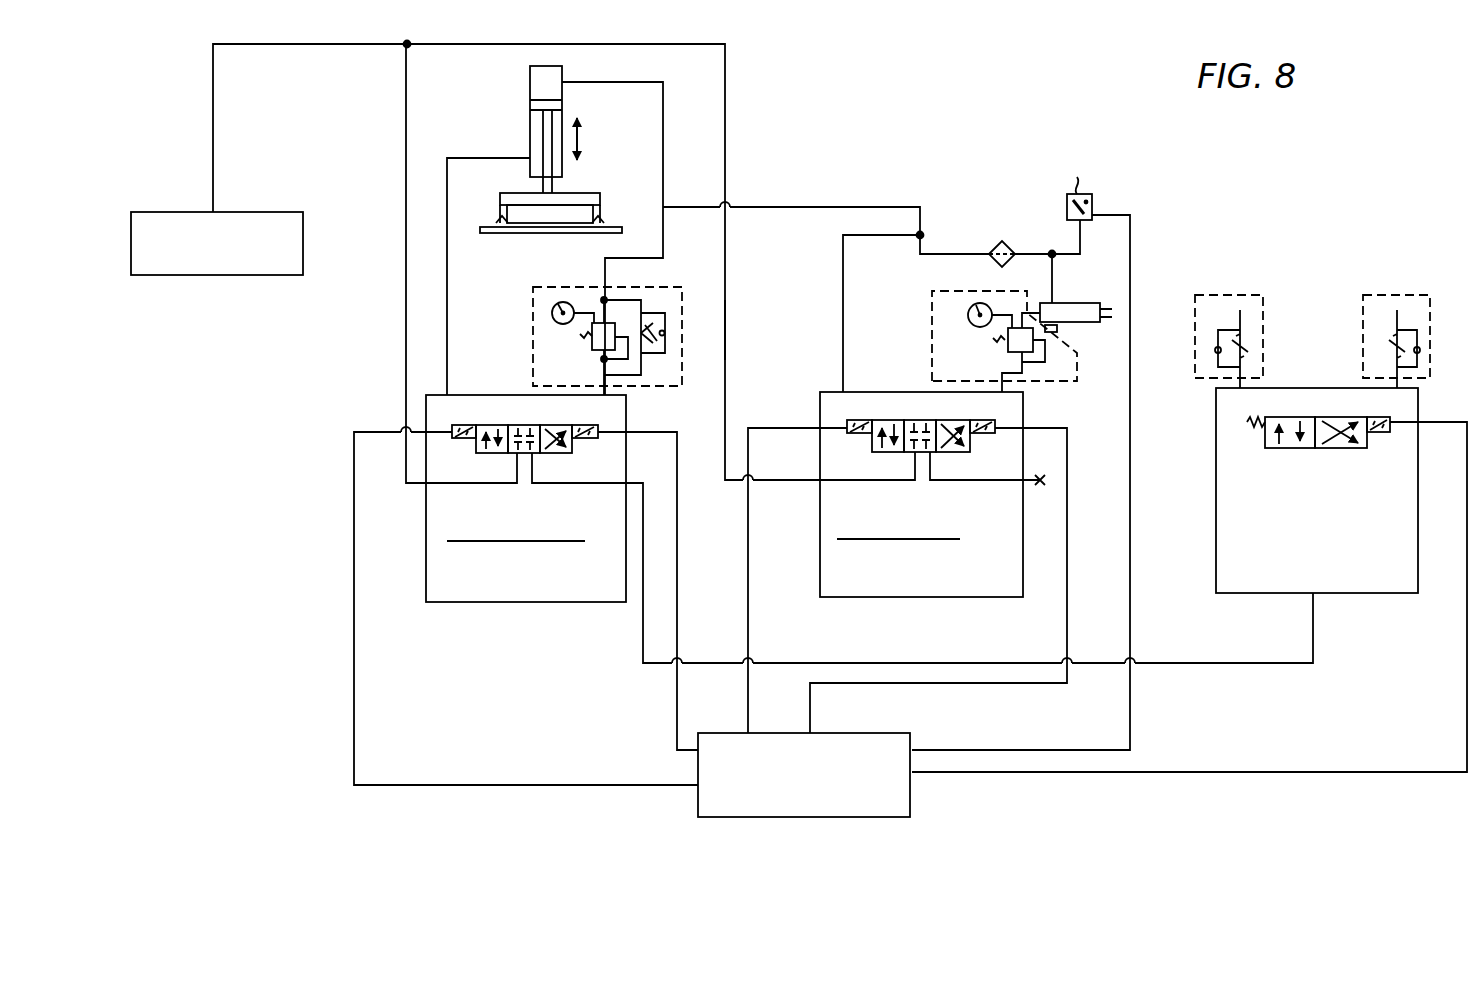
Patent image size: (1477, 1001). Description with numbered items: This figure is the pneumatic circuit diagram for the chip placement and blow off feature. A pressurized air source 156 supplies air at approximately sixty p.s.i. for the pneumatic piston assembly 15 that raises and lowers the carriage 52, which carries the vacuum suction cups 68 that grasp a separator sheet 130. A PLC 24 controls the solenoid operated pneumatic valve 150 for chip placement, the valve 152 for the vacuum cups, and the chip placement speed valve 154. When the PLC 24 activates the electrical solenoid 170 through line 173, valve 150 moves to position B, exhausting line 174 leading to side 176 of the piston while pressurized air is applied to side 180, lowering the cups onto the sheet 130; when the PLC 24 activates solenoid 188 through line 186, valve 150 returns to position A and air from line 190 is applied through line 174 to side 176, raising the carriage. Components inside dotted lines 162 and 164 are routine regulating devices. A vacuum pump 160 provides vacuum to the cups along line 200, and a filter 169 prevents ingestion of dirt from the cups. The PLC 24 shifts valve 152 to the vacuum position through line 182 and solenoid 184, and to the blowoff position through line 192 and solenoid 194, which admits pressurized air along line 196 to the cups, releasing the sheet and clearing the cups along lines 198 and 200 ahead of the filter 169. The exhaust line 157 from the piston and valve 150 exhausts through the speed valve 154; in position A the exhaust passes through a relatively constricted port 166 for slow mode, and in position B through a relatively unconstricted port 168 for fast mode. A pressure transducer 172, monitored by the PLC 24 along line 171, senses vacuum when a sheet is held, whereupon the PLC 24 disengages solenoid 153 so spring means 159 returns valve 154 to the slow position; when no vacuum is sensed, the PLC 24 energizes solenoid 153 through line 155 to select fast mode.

The pneumatic piston assembly 15 is at (527, 68).
The side of piston 180 is at (555, 82).
The side of piston 176 is at (530, 133).
The carriage 52 is at (522, 195).
The vacuum suction cups 68 is at (500, 224).
The sheet 130 is at (575, 232).
The line 174 is at (447, 258).
The pressurized air source 156 is at (305, 255).
The line 190 is at (406, 323).
The regulating devices 162 is at (533, 338).
The solenoid 188 is at (455, 438).
The electrical solenoid 170 is at (588, 438).
The solenoid operated pneumatic valve 150 is at (526, 526).
The line 186 is at (354, 612).
The line 173 is at (677, 616).
The line 196 is at (725, 352).
The line 198 is at (843, 258).
The line 200 is at (920, 222).
The filter 169 is at (1003, 240).
The pressure transducer 172 is at (1092, 200).
The vacuum pump 160 is at (1080, 303).
The regulating devices 164 is at (940, 325).
The solenoid 194 is at (850, 434).
The solenoid 184 is at (985, 440).
The line 192 is at (748, 636).
The valve 152 is at (932, 516).
The line 182 is at (1067, 605).
The constricted port 166 is at (1243, 295).
The unconstricted port 168 is at (1410, 295).
The spring means 159 is at (1243, 422).
The solenoid 153 is at (1380, 432).
The exhaust line 157 is at (1203, 663).
The chip placement speed valve 154 is at (1262, 596).
The line 155 is at (1311, 518).
The line 171 is at (1053, 750).
The PLC 24 is at (897, 819).